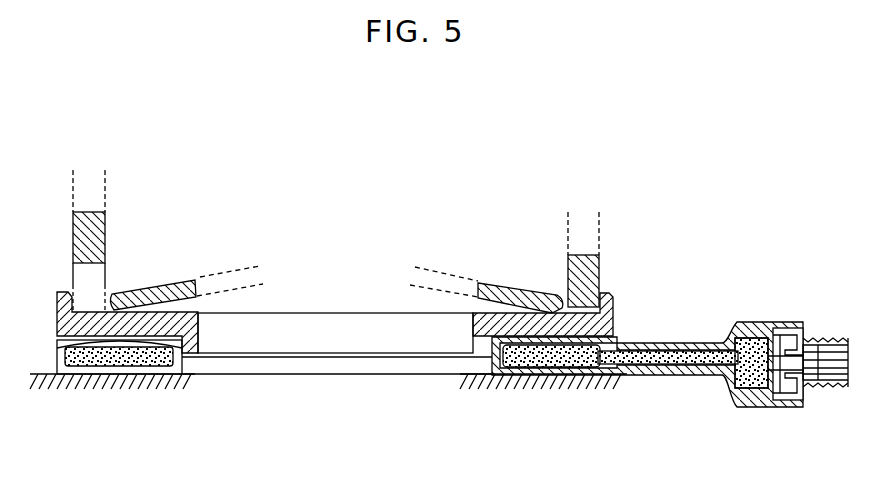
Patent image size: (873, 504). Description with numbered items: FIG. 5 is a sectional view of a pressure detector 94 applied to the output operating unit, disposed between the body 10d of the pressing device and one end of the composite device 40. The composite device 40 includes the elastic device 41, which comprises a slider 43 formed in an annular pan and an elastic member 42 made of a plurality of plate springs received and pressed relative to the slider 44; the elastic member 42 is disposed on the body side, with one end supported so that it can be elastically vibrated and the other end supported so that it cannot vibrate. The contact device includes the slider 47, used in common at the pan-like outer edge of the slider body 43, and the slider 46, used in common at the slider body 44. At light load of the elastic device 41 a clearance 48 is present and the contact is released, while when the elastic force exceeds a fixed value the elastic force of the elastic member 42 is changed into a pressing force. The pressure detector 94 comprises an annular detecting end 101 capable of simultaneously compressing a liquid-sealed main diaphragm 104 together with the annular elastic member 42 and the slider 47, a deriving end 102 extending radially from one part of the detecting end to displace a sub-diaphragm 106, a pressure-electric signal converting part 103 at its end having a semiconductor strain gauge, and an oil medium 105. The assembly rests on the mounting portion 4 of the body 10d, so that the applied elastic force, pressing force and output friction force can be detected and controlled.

The mounting portion 4 is at (467, 327).
The body 10d is at (155, 378).
The composite device 40 is at (611, 235).
The elastic device 41 is at (428, 252).
The elastic member 42 is at (170, 290).
The slider 43 is at (573, 228).
The slider 44 is at (200, 330).
The slider 46 is at (83, 307).
The slider 47 is at (100, 222).
The clearance 48 is at (83, 280).
The pressure detector 94 is at (718, 315).
The detecting end 101 is at (297, 377).
The deriving end 102 is at (647, 387).
The pressure-electric signal converting part 103 is at (775, 385).
The main diaphragm 104 is at (113, 350).
The oil medium 105 is at (563, 363).
The sub-diaphragm 106 is at (763, 350).